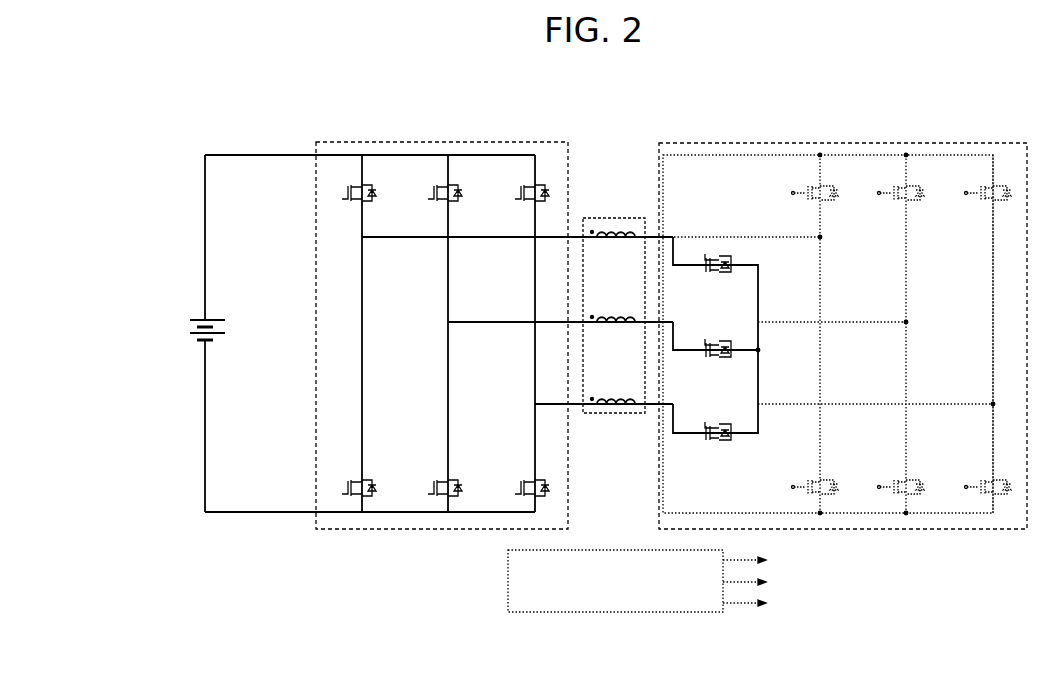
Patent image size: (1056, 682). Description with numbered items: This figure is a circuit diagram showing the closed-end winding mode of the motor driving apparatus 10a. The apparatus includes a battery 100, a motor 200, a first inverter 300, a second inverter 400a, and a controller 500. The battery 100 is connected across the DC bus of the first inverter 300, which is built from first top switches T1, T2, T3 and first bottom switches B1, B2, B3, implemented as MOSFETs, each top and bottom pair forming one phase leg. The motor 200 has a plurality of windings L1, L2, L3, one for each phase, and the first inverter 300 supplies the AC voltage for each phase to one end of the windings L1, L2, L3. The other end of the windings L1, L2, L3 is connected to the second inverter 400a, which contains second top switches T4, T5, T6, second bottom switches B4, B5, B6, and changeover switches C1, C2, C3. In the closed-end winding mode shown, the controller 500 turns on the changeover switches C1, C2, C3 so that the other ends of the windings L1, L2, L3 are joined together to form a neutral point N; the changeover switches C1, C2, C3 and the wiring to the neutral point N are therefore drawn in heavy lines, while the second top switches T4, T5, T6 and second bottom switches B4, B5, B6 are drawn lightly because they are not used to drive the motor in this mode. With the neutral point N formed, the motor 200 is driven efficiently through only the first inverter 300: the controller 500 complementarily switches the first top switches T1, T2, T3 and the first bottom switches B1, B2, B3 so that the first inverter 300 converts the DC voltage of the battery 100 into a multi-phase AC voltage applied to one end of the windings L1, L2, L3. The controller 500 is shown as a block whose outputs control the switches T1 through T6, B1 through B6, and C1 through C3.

The motor driving apparatus 10a is at (220, 102).
The battery 100 is at (195, 318).
The motor 200 is at (614, 295).
The first inverter 300 is at (494, 313).
The second inverter 400a is at (844, 313).
The controller 500 is at (507, 581).
The first top switch T1 is at (356, 204).
The first top switch T2 is at (442, 204).
The first top switch T3 is at (529, 204).
The second top switch T4 is at (815, 203).
The second top switch T5 is at (901, 203).
The second top switch T6 is at (988, 203).
The first bottom switch B1 is at (356, 478).
The first bottom switch B2 is at (442, 478).
The first bottom switch B3 is at (529, 478).
The second bottom switch B4 is at (815, 477).
The second bottom switch B5 is at (901, 477).
The second bottom switch B6 is at (988, 477).
The changeover switch C1 is at (718, 277).
The changeover switch C2 is at (718, 362).
The changeover switch C3 is at (718, 445).
The winding L1 is at (613, 243).
The winding L2 is at (613, 328).
The winding L3 is at (613, 393).
The neutral point N is at (765, 350).